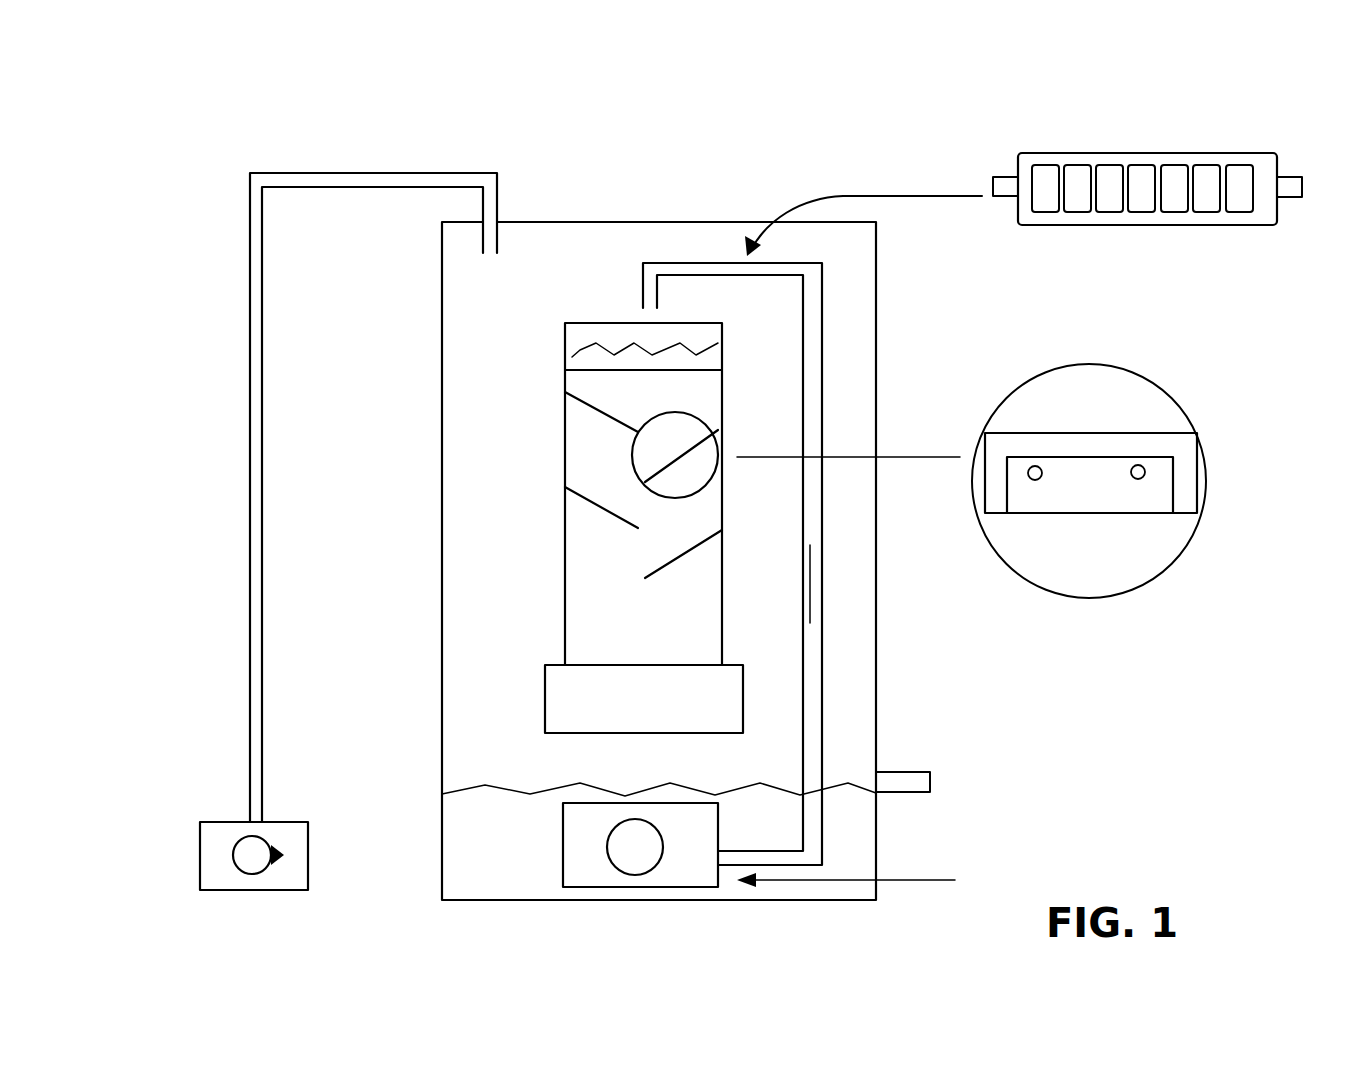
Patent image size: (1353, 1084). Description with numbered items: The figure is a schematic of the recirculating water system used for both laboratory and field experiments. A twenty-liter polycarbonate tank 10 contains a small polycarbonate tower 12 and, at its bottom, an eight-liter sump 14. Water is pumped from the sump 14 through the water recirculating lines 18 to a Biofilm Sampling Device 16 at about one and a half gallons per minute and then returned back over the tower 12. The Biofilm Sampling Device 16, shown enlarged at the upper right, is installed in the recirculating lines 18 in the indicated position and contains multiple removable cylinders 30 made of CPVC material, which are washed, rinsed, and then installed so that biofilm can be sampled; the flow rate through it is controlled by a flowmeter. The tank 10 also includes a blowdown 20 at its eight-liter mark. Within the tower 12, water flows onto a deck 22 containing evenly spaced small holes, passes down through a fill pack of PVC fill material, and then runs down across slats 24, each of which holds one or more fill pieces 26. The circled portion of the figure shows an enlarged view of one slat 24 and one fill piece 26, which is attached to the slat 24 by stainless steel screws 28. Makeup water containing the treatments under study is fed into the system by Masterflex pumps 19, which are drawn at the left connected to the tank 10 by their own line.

The polycarbonate tank 10 is at (572, 198).
The polycarbonate tower 12 is at (763, 707).
The sump 14 is at (848, 853).
The Biofilm Sampling Device 16 is at (1286, 236).
The water recirculating lines 18 is at (814, 306).
The Masterflex pumps 19 is at (188, 868).
The blowdown 20 is at (936, 780).
The deck 22 is at (753, 345).
The slats 24 is at (587, 497).
The fill pieces 26 is at (1130, 505).
The stainless steel screws 28 is at (1144, 467).
The removable cylinders 30 is at (1045, 178).